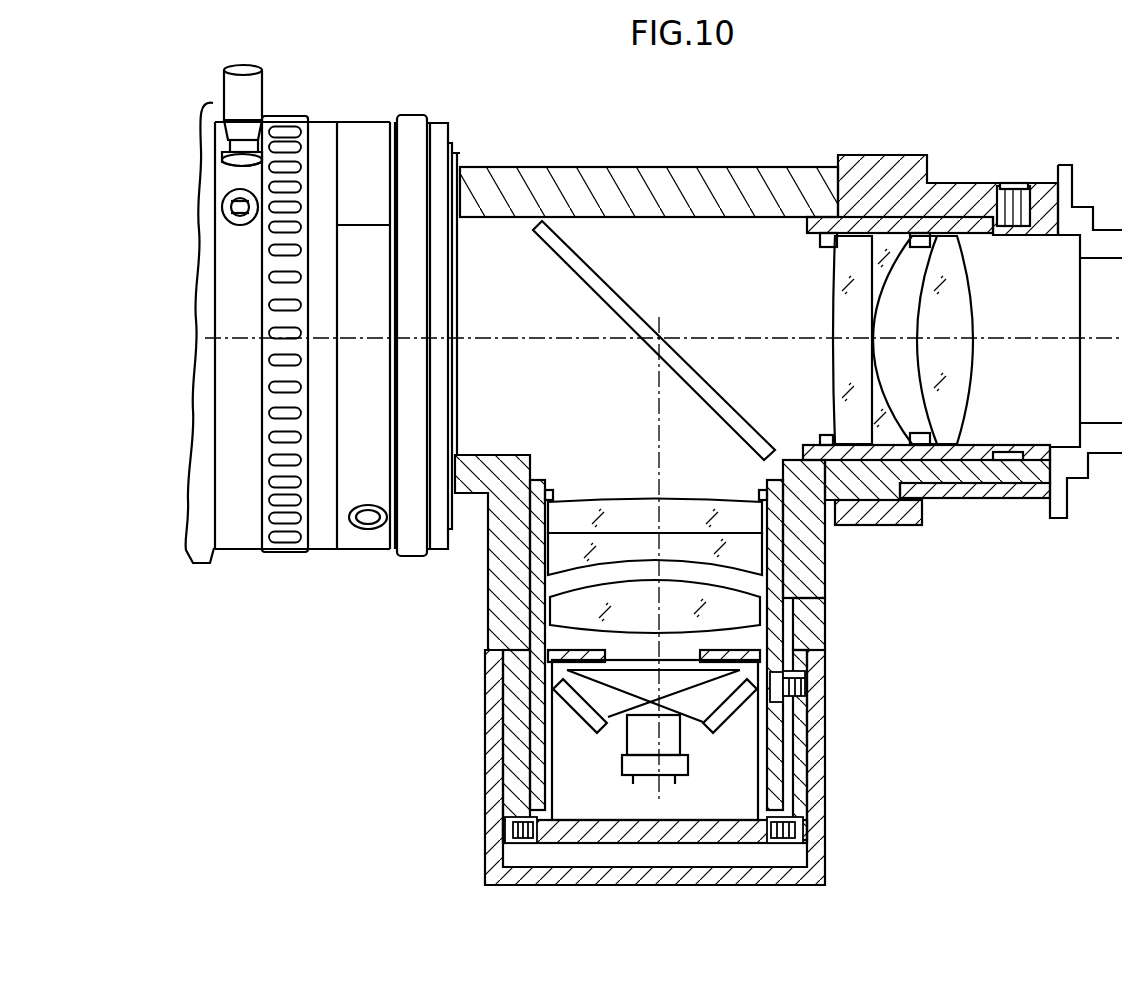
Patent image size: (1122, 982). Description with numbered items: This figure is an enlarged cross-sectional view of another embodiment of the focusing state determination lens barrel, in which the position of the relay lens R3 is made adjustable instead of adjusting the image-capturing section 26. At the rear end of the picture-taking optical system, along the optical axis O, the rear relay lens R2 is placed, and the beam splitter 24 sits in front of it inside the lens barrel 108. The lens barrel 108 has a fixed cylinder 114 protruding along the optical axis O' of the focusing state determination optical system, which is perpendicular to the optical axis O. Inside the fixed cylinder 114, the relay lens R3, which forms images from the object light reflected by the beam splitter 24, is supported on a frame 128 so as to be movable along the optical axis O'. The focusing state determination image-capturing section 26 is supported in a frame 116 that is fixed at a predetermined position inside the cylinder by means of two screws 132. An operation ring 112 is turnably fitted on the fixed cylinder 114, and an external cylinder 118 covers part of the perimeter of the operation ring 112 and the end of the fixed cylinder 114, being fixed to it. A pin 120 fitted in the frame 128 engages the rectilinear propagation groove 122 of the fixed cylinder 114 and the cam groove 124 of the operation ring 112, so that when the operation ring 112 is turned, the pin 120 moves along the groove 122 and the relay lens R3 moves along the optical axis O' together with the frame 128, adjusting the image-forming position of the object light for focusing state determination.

The lens barrel 108 is at (773, 156).
The rear relay lens R2 is at (958, 313).
The relay lens R3 is at (635, 545).
The beam splitter 24 is at (742, 412).
The optical axis O is at (663, 307).
The optical axis O' is at (610, 558).
The focusing state determination image-capturing section 26 is at (615, 754).
The frame 128 is at (533, 566).
The fixed cylinder 114 is at (813, 583).
The operation ring 112 is at (818, 638).
The frame 116 is at (703, 841).
The external cylinder 118 is at (822, 882).
The pin 120 is at (825, 715).
The rectilinear propagation groove 122 is at (796, 690).
The cam groove 124 is at (803, 685).
The screws 132 is at (507, 825).